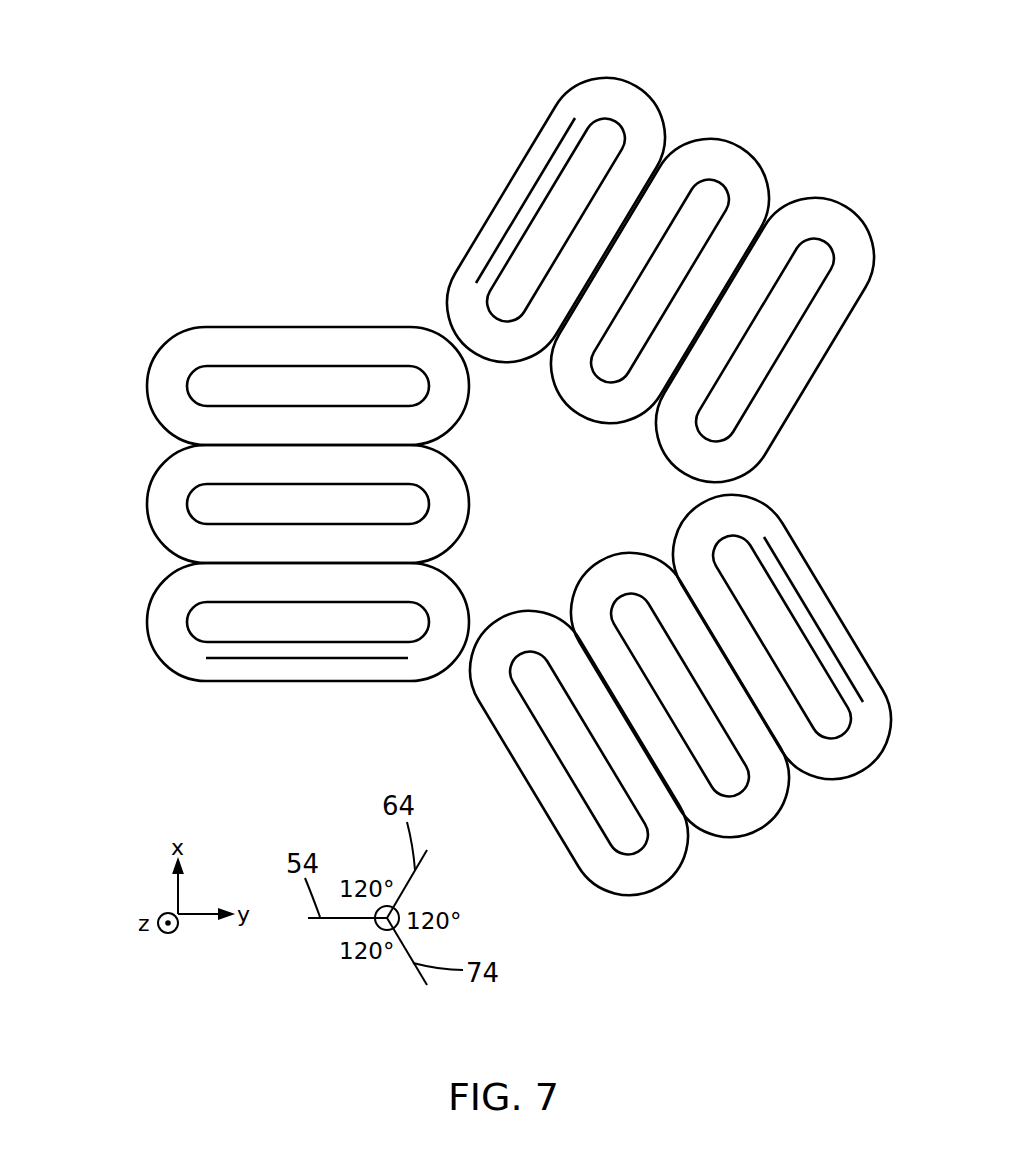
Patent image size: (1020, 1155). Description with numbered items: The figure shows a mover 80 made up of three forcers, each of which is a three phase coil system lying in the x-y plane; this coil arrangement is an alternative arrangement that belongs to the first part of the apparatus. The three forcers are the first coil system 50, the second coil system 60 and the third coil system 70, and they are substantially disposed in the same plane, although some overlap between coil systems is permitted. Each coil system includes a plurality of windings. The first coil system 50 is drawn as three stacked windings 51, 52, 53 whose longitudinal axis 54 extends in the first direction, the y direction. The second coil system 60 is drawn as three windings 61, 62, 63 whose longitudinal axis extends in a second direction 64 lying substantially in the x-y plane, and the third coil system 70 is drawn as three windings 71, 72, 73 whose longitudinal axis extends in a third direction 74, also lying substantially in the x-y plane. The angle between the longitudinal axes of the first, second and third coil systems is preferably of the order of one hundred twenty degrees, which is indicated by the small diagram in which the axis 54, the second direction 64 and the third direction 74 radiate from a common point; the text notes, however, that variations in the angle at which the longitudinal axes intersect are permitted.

The first coil system 50 is at (245, 308).
The first coil of first set 51 is at (152, 360).
The second coil of first set 52 is at (148, 492).
The third coil of first set 53 is at (148, 618).
The longitudinal axis 54 is at (252, 660).
The second coil system 60 is at (728, 88).
The first coil of second set 61 is at (650, 87).
The second coil of second set 62 is at (755, 152).
The third coil of second set 63 is at (843, 200).
The second direction 64 is at (532, 187).
The third coil system 70 is at (836, 572).
The first coil of third set 71 is at (663, 885).
The second coil of third set 72 is at (777, 818).
The third coil of third set 73 is at (877, 763).
The third direction 74 is at (835, 650).
The mover 80 is at (313, 207).